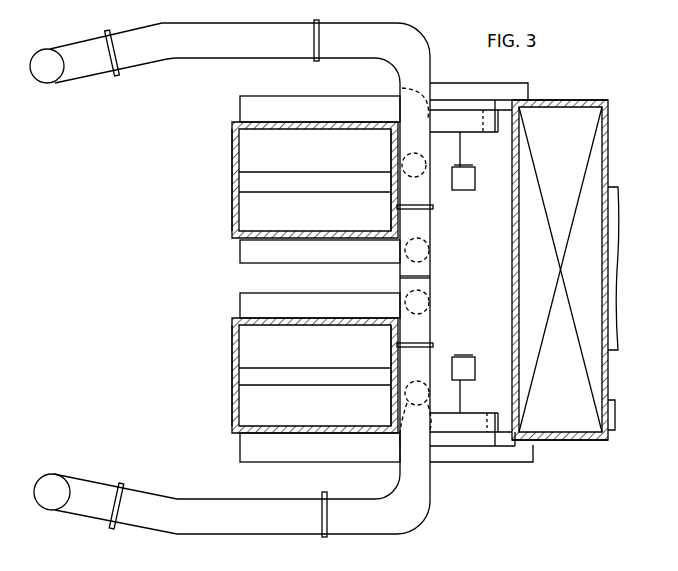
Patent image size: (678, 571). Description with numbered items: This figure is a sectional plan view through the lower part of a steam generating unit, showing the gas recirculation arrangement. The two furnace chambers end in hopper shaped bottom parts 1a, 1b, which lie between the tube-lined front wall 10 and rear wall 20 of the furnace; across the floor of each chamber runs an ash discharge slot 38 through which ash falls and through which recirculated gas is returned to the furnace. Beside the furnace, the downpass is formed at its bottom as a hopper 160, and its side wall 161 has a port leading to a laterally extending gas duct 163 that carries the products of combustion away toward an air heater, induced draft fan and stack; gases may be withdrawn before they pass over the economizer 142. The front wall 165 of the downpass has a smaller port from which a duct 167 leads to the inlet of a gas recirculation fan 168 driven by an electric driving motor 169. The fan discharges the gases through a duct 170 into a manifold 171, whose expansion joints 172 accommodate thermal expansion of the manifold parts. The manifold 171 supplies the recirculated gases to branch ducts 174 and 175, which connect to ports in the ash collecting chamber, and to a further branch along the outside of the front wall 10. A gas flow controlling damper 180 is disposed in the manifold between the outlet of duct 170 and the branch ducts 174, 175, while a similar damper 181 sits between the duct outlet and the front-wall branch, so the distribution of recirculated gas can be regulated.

The hopper shaped bottom part 1a is at (320, 363).
The hopper shaped bottom part 1b is at (325, 168).
The front wall 10 is at (237, 218).
The rear wall 20 is at (398, 152).
The ash discharge slot 38 is at (257, 174).
The economizer 142 is at (562, 108).
The hopper 160 is at (598, 278).
The side wall 161 is at (607, 441).
The gas duct 163 is at (613, 295).
The front wall of the downpass 165 is at (597, 104).
The duct 167 is at (493, 93).
The gas recirculation fan 168 is at (483, 134).
The electric driving motor 169 is at (466, 190).
The duct 170 is at (453, 122).
The manifold 171 is at (413, 48).
The expansion joints 172 is at (108, 40).
The branch duct 174 is at (253, 110).
The branch duct 175 is at (252, 257).
The gas flow controlling damper 180 is at (420, 143).
The damper 181 is at (424, 71).